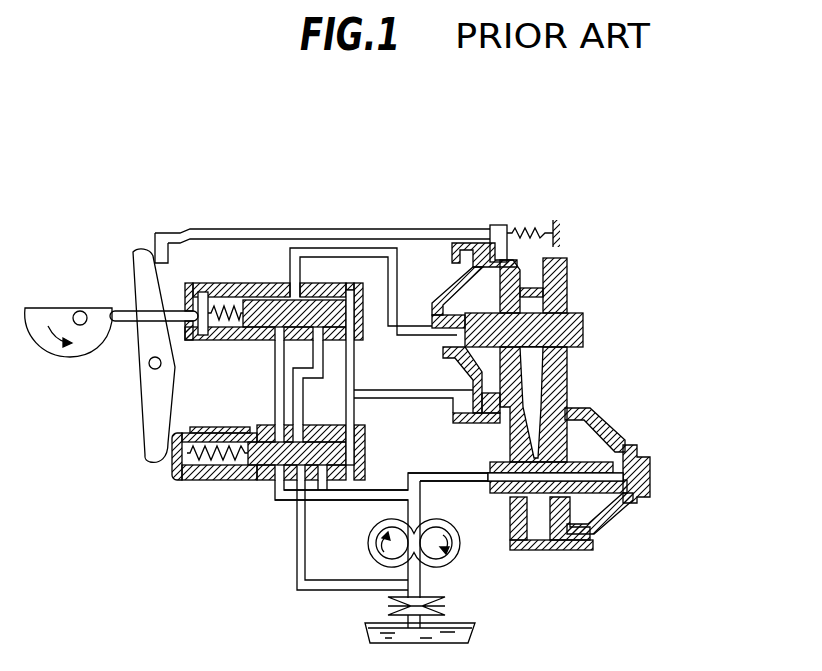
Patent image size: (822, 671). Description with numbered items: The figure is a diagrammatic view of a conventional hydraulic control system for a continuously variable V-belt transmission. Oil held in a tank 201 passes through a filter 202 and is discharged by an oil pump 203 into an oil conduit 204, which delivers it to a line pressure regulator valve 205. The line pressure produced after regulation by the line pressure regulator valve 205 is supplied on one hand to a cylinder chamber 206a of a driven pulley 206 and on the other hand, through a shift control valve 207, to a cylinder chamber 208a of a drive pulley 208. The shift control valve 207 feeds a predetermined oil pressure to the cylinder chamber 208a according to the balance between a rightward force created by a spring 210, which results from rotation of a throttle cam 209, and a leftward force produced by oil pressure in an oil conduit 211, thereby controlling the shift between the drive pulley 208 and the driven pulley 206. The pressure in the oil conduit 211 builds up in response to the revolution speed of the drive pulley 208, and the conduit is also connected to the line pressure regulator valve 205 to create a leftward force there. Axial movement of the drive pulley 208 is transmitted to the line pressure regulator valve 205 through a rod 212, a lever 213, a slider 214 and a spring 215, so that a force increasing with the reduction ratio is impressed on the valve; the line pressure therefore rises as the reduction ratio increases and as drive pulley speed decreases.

The tank 201 is at (362, 628).
The filter 202 is at (445, 598).
The oil pump 203 is at (375, 535).
The oil conduit 204 is at (392, 490).
The line pressure regulator valve 205 is at (261, 489).
The driven pulley 206 is at (604, 430).
The cylinder chamber 206a is at (610, 452).
The shift control valve 207 is at (258, 351).
The drive pulley 208 is at (582, 265).
The cylinder chamber 208a is at (490, 297).
The throttle cam 209 is at (58, 358).
The spring 210 is at (213, 313).
The oil conduit 211 is at (391, 390).
The rod 212 is at (325, 229).
The lever 213 is at (147, 434).
The slider 214 is at (172, 474).
The spring 215 is at (194, 464).